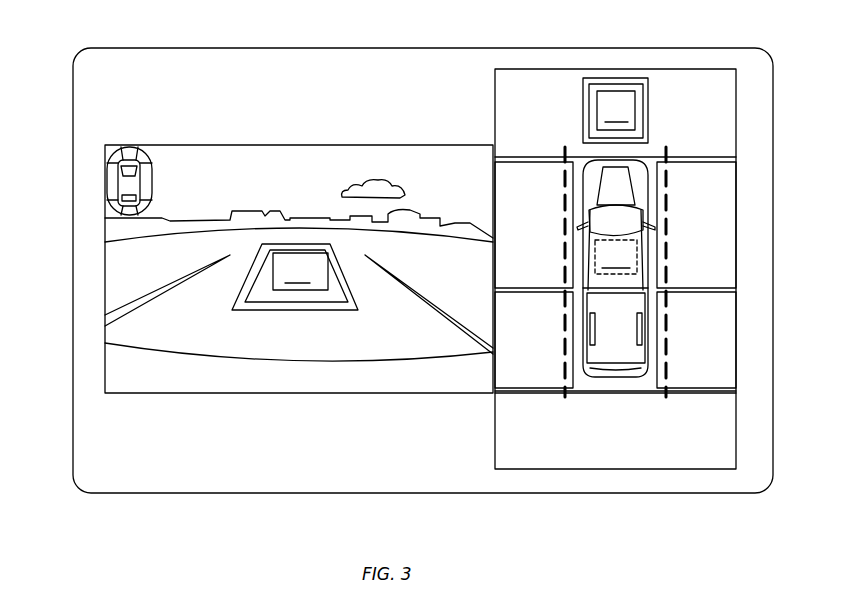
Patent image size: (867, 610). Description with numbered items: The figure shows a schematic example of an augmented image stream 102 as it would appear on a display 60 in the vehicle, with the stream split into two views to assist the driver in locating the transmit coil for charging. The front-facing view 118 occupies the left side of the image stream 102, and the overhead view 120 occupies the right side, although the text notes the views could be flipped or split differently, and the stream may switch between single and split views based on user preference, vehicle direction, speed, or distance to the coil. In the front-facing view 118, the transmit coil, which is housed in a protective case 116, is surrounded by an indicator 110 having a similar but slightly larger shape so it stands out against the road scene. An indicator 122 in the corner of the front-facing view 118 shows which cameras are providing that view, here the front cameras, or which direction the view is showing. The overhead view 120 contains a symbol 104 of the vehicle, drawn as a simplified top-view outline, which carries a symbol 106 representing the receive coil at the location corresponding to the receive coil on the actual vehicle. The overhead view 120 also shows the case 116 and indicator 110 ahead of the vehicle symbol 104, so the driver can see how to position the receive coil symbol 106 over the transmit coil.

The display 60 is at (305, 47).
The augmented image stream 102 is at (188, 167).
The symbol of the vehicle 104 is at (649, 255).
The symbol of the receive coil 106 is at (616, 257).
The indicator 110 is at (338, 258).
The protective case 116 is at (328, 280).
The front-facing view 118 is at (118, 258).
The overhead view 120 is at (720, 338).
The indicator 122 is at (110, 158).